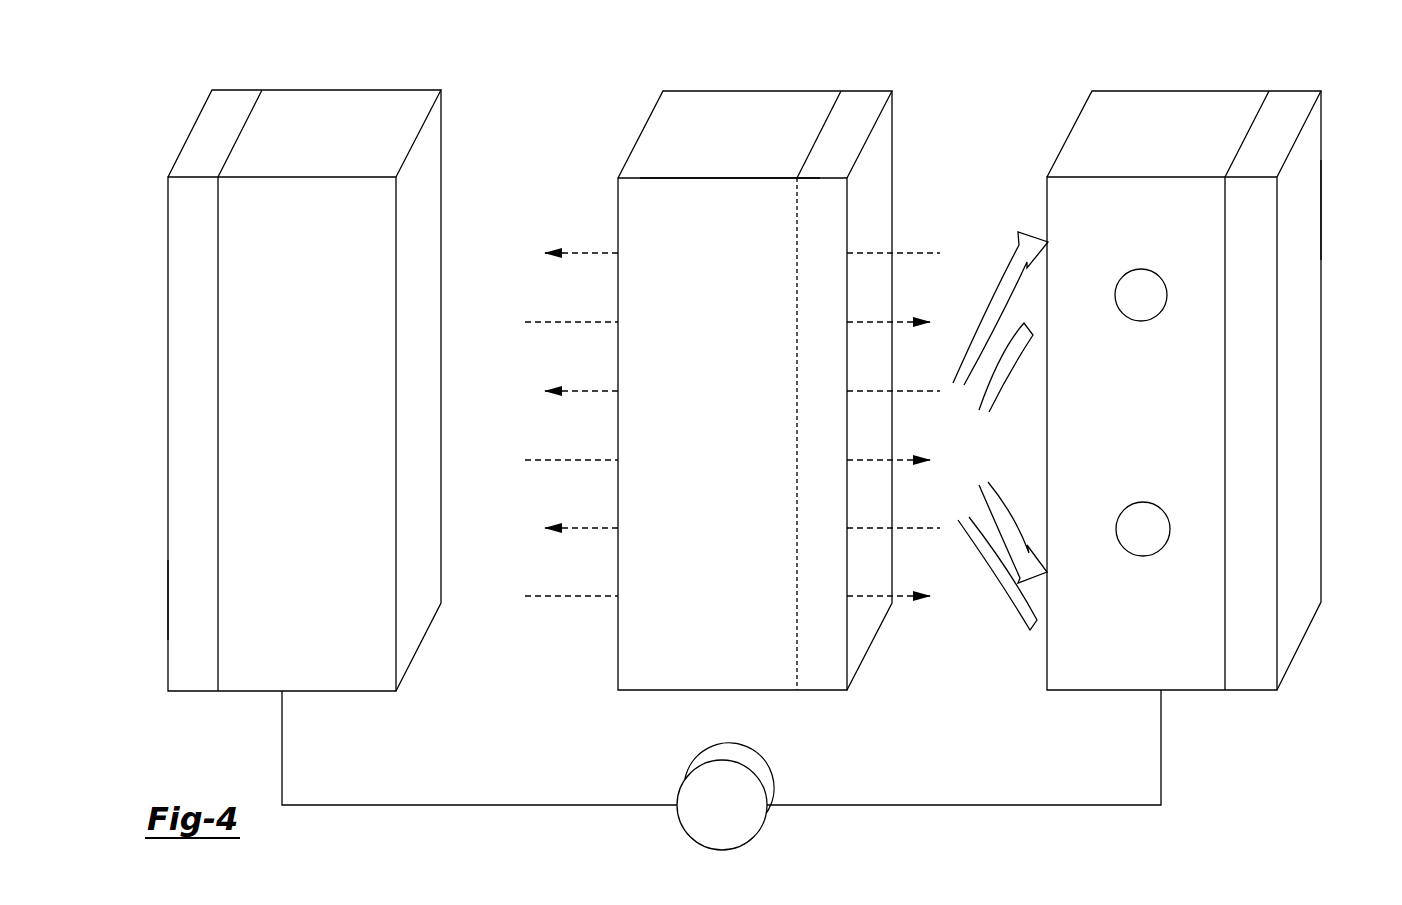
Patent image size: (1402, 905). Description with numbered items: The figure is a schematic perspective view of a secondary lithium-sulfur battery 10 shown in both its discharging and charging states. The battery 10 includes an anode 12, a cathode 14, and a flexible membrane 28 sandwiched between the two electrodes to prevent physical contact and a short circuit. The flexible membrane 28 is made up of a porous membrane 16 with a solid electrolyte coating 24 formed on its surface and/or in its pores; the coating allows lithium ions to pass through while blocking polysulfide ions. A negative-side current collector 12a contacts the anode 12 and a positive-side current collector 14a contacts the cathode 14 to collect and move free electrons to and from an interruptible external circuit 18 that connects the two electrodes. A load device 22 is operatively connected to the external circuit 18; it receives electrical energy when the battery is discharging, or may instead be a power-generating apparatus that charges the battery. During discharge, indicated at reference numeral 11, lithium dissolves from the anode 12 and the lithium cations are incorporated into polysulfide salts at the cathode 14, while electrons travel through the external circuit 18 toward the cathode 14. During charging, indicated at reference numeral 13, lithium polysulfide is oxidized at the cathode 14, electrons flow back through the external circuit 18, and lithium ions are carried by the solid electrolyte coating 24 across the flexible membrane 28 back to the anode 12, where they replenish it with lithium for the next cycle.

The lithium-sulfur battery 10 is at (1334, 697).
The battery discharge 11 is at (915, 322).
The anode 12 is at (310, 423).
The negative-side current collector 12a is at (191, 600).
The battery charging 13 is at (578, 253).
The cathode 14 is at (1148, 423).
The positive-side current collector 14a is at (1296, 212).
The porous membrane 16 is at (648, 692).
The external circuit 18 is at (1018, 808).
The load device 22 is at (729, 811).
The solid electrolyte coating 24 is at (856, 114).
The flexible membrane 28 is at (762, 86).